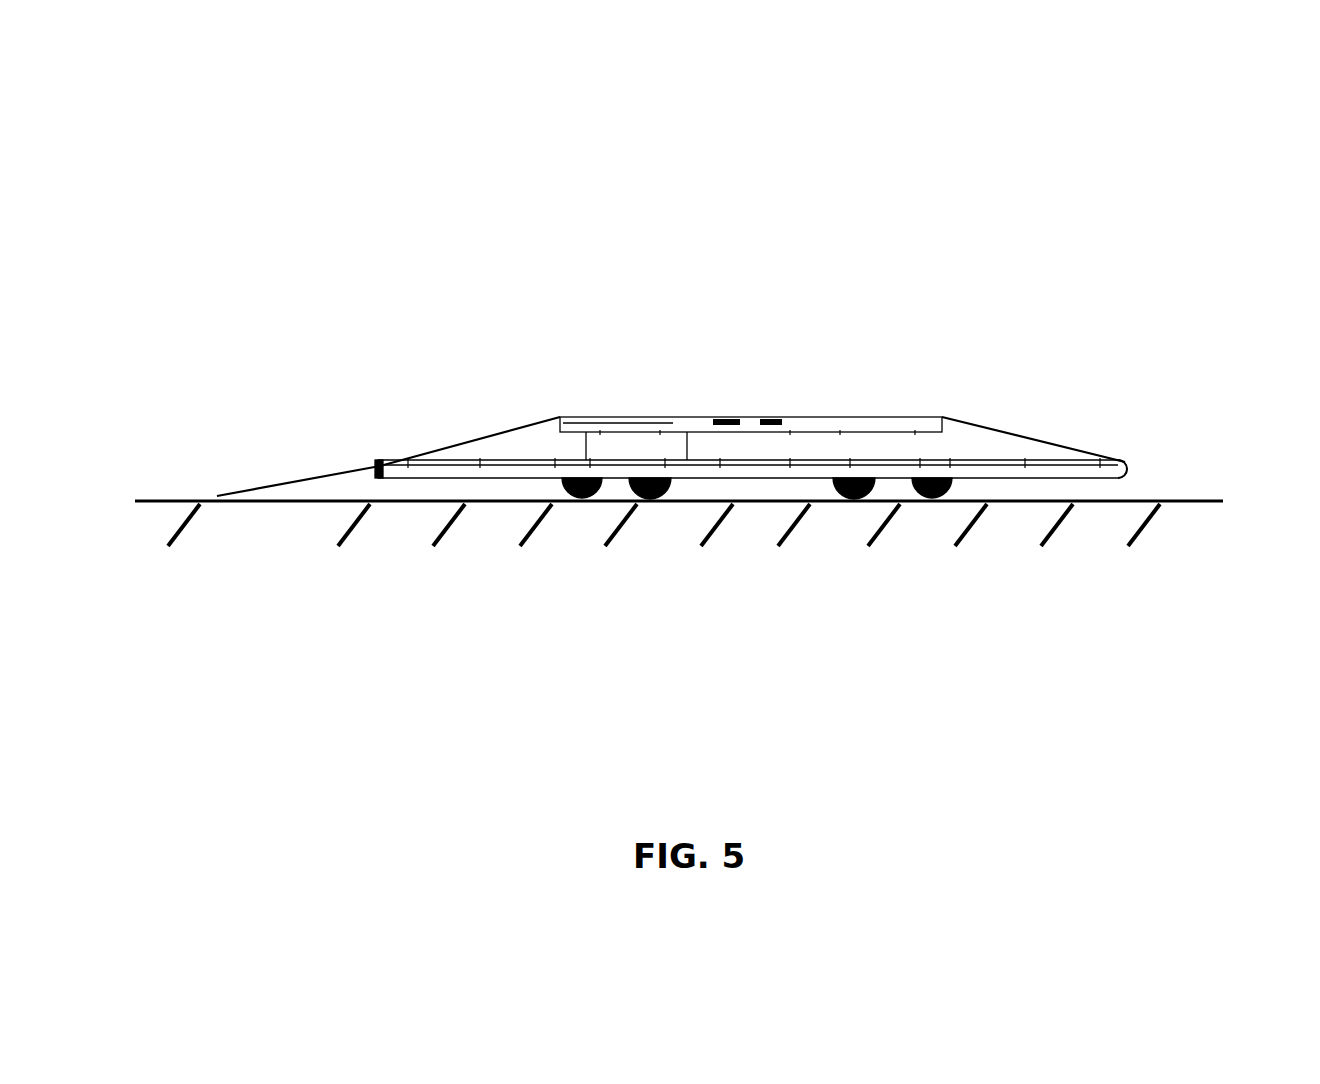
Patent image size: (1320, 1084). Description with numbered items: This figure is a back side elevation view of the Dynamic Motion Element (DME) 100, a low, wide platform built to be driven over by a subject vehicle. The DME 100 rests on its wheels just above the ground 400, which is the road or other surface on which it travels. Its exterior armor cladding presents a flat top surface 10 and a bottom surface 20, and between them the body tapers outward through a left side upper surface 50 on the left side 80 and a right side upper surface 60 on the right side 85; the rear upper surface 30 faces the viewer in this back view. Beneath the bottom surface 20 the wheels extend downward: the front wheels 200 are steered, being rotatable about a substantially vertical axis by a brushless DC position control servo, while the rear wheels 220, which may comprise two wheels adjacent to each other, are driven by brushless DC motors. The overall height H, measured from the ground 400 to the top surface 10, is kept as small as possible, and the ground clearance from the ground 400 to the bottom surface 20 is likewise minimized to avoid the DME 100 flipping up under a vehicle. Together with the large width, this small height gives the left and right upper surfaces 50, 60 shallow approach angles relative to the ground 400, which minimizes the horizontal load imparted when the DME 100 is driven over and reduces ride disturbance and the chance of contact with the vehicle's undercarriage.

The Dynamic Motion Element 100 is at (578, 233).
The top surface 10 is at (855, 413).
The bottom surface 20 is at (423, 478).
The rear upper surface 30 is at (687, 425).
The left side upper surface 50 is at (468, 440).
The right side upper surface 60 is at (1005, 428).
The left side 80 is at (378, 466).
The right side 85 is at (1133, 465).
The front wheels 200 is at (580, 499).
The rear wheels 220 is at (848, 500).
The ground 400 is at (255, 503).